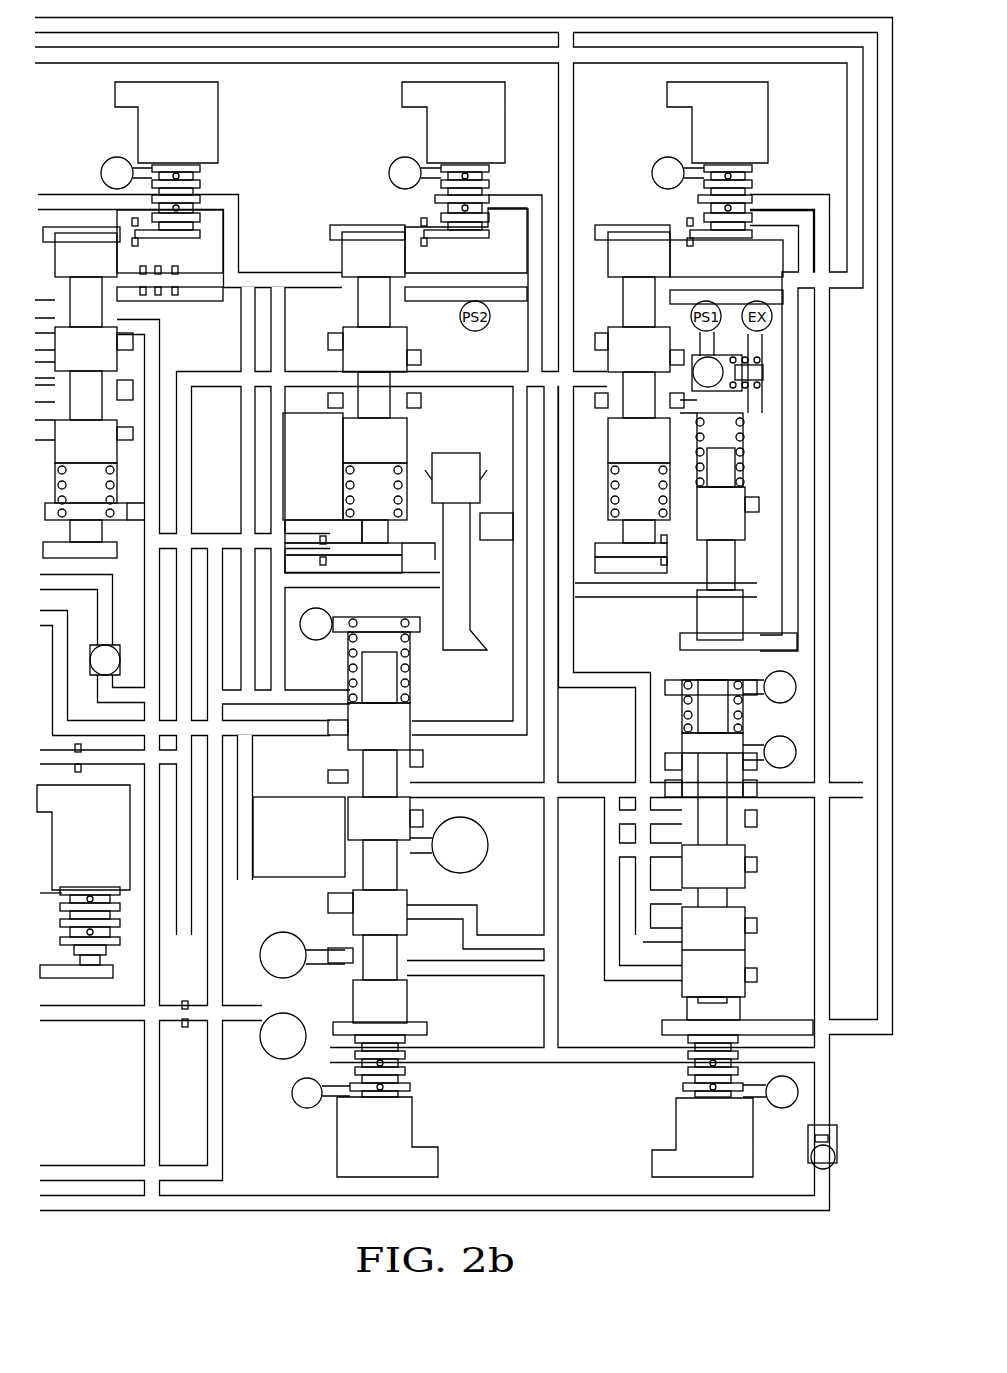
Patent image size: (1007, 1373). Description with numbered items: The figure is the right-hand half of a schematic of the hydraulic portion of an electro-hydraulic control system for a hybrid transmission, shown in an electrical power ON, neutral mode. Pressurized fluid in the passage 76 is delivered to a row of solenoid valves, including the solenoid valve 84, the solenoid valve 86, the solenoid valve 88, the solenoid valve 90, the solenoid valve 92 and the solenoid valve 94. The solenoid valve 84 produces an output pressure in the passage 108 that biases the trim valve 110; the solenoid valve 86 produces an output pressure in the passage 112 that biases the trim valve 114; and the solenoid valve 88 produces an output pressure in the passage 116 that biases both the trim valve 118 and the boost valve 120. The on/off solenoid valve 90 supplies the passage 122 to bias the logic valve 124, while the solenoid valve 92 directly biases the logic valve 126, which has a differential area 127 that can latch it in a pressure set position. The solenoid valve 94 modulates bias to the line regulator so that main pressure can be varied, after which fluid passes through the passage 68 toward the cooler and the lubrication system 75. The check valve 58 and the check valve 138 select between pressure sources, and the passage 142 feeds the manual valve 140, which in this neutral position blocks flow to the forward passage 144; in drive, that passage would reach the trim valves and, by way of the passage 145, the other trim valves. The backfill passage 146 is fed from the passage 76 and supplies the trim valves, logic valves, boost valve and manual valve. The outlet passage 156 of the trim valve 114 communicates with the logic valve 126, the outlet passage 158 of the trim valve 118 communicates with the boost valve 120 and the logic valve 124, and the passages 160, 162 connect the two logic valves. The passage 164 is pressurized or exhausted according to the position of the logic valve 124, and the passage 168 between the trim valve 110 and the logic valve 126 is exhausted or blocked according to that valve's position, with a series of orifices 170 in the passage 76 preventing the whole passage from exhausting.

The check valve 58 is at (118, 595).
The passage 68 is at (223, 902).
The lubrication system 75 is at (278, 1060).
The passage 76 is at (60, 200).
The solenoid valve 84 is at (159, 160).
The solenoid valve 86 is at (447, 160).
The solenoid valve 88 is at (710, 160).
The solenoid valve 90 is at (702, 1137).
The solenoid valve 92 is at (387, 1137).
The solenoid valve 94 is at (83, 881).
The passage 108 is at (170, 243).
The trim valve 110 is at (88, 212).
The passage 112 is at (465, 243).
The trim valve 114 is at (368, 212).
The passage 116 is at (705, 243).
The trim valve 118 is at (630, 212).
The boost valve 120 is at (678, 617).
The passage 122 is at (775, 1020).
The logic valve 124 is at (662, 996).
The logic valve 126 is at (420, 998).
The differential area 127 is at (415, 870).
The check valve 138 is at (838, 1140).
The manual valve 140 is at (452, 665).
The passage 142 is at (338, 588).
The forward passage 144 is at (500, 540).
The passage 145 is at (120, 712).
The backfill passage 146 is at (272, 368).
The outlet passage 156 is at (290, 460).
The outlet passage 158 is at (597, 598).
The passage 160 is at (505, 937).
The passage 162 is at (507, 978).
The passage 164 is at (848, 500).
The passage 168 is at (310, 690).
The orifices 170 is at (170, 302).